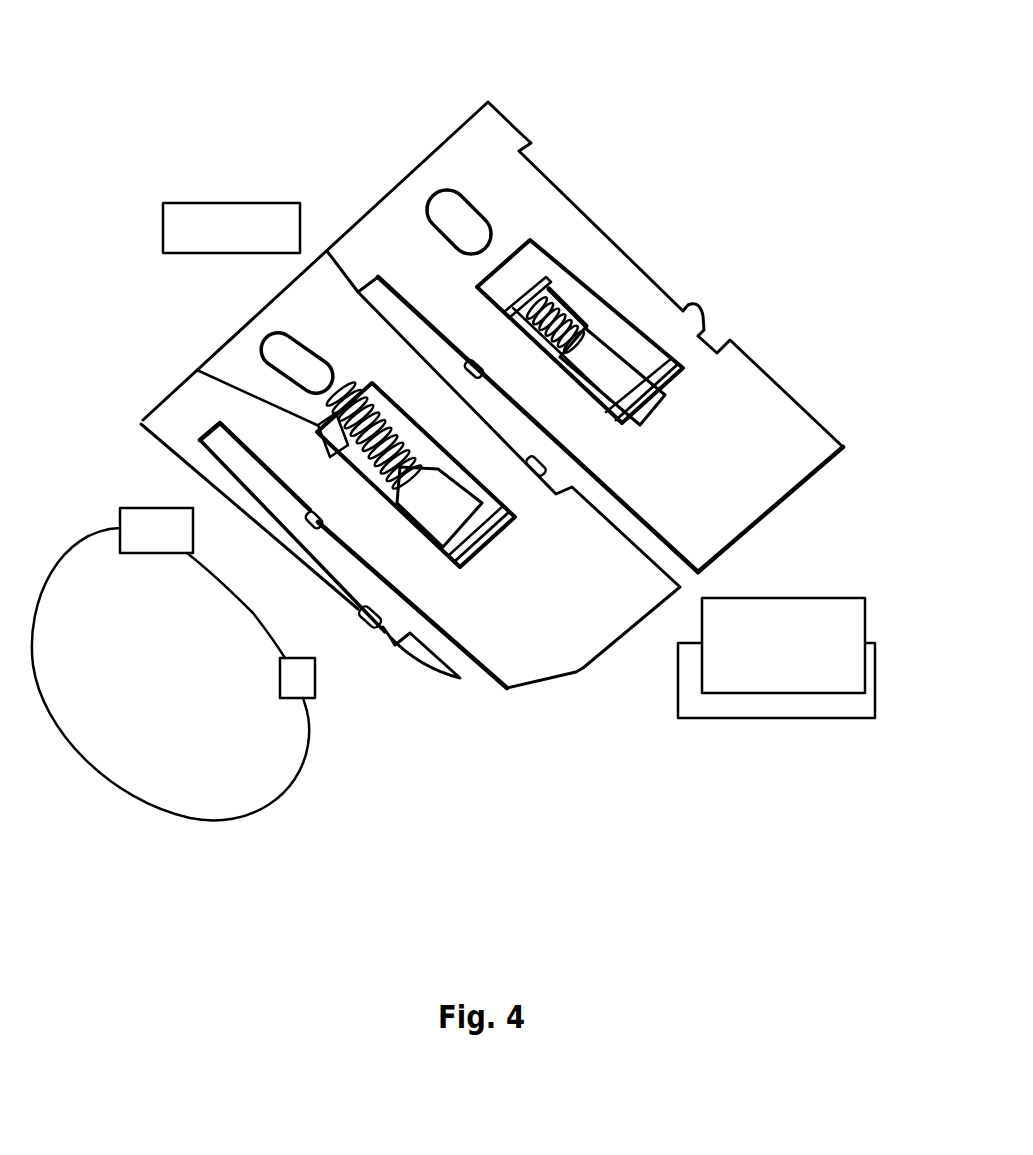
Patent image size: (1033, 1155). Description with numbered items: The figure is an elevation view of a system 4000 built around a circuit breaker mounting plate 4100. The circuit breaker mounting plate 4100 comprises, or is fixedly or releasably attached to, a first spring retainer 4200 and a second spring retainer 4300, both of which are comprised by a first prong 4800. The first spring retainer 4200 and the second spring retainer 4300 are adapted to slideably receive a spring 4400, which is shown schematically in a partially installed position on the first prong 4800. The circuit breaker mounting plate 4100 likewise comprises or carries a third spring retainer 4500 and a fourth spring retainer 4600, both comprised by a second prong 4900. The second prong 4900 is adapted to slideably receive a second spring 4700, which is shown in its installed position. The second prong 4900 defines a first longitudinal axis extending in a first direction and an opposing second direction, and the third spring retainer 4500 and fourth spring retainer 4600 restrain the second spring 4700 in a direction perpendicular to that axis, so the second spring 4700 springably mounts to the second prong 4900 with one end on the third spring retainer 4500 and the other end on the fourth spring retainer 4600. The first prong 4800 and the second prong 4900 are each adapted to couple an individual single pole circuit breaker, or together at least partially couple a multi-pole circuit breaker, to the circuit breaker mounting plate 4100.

The system 4000 is at (216, 35).
The circuit breaker mounting plate 4100 is at (508, 410).
The first spring retainer 4200 is at (430, 510).
The second spring retainer 4300 is at (353, 457).
The spring 4400 is at (345, 382).
The third spring retainer 4500 is at (598, 330).
The fourth spring retainer 4600 is at (536, 293).
The second spring 4700 is at (563, 297).
The first prong 4800 is at (333, 432).
The second prong 4900 is at (501, 272).